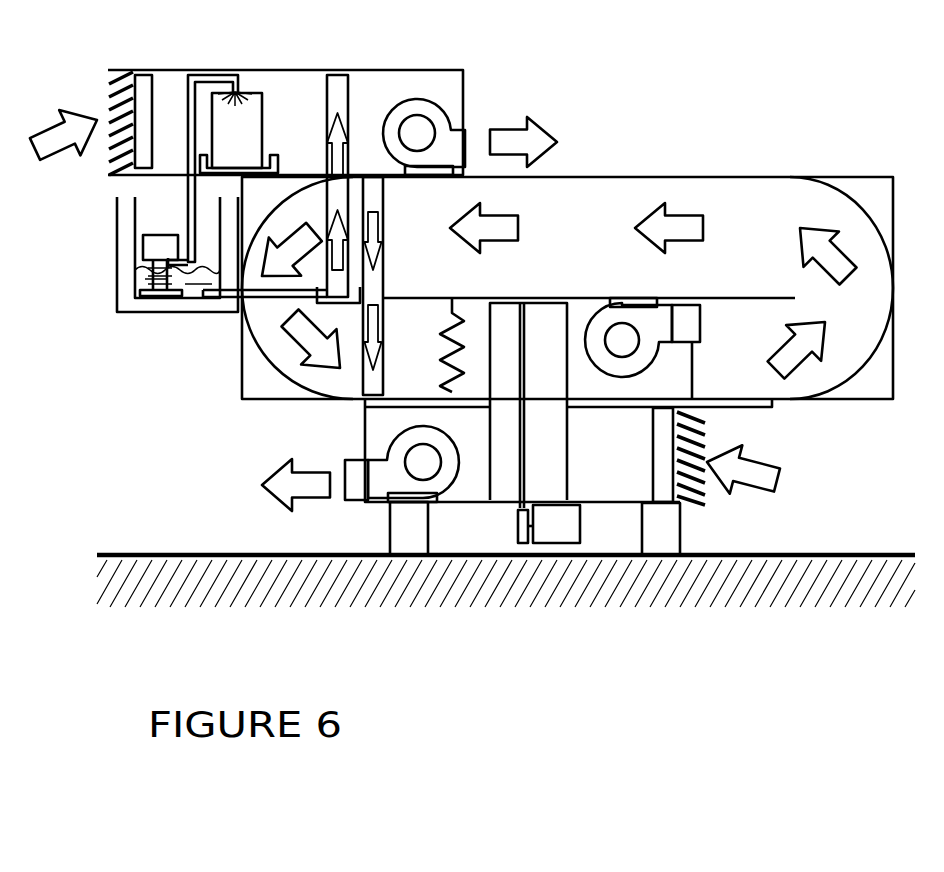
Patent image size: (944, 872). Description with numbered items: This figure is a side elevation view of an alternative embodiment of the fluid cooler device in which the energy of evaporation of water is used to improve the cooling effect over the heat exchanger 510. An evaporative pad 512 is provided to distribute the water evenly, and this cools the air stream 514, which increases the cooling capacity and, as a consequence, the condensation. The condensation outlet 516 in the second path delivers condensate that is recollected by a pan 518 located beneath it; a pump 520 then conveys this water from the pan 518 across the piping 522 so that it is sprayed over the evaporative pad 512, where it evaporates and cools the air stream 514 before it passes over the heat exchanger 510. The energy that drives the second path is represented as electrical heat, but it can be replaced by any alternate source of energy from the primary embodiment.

The heat exchanger 510 is at (352, 90).
The evaporative pad 512 is at (252, 95).
The air stream 514 is at (298, 88).
The condensation outlet 516 is at (275, 298).
The pan 518 is at (190, 290).
The pump 520 is at (162, 250).
The piping 522 is at (187, 82).